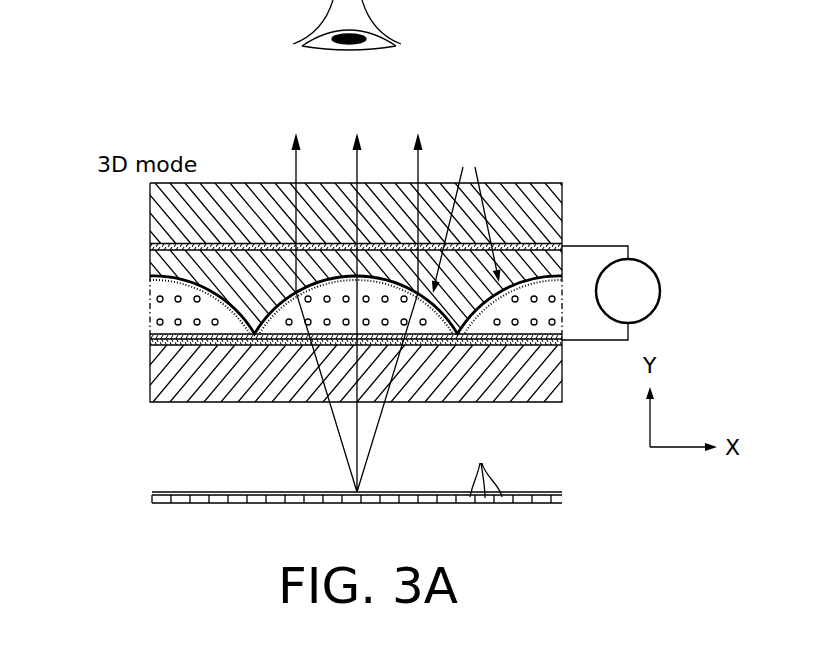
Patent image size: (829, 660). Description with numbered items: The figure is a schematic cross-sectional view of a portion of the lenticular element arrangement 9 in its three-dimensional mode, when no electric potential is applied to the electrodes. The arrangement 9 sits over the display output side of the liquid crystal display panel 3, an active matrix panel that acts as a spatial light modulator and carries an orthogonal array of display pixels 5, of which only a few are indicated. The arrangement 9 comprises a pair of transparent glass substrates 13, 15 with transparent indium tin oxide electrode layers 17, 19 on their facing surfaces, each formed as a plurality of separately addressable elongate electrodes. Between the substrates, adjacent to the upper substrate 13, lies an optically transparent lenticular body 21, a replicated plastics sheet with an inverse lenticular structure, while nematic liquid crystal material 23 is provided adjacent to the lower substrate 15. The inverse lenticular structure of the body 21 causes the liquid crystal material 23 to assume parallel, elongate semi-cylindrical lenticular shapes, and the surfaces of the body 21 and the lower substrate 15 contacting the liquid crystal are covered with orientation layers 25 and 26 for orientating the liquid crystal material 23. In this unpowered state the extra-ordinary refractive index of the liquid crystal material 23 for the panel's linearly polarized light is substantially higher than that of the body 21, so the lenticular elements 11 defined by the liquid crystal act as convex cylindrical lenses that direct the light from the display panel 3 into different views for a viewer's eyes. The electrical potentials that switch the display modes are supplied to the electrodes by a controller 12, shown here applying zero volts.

The liquid crystal display panel 3 is at (531, 507).
The display pixels 5 is at (486, 469).
The lenticular element arrangement 9 is at (543, 131).
The lenticular elements 11 is at (466, 215).
The controller 12 is at (658, 283).
The upper transparent glass substrate 13 is at (550, 199).
The lower transparent glass substrate 15 is at (550, 381).
The upper transparent electrode layer 17 is at (552, 244).
The lower transparent electrode layer 19 is at (157, 353).
The lenticular body 21 is at (157, 259).
The nematic liquid crystal material 23 is at (157, 308).
The orientation layer 25 is at (153, 279).
The orientation layer 26 is at (155, 336).